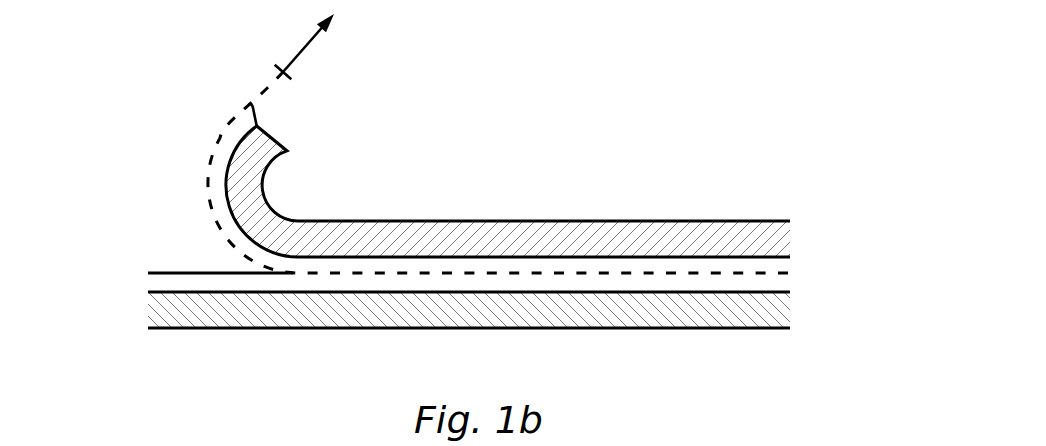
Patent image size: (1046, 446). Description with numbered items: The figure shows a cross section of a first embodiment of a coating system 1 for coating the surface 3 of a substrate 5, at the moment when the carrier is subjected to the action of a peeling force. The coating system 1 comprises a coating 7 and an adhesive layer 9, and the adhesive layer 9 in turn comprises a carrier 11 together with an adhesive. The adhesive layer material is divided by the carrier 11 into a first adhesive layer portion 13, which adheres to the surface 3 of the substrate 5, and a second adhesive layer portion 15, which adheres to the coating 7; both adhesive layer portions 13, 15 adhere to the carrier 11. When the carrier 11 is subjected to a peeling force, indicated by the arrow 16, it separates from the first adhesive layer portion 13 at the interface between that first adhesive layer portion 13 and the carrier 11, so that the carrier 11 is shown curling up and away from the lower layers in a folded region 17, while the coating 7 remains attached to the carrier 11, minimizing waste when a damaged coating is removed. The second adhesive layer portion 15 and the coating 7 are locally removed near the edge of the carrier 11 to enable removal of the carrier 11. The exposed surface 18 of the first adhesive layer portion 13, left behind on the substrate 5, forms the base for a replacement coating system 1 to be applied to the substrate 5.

The coating system 1 is at (114, 257).
The surface 3 is at (758, 281).
The substrate 5 is at (183, 308).
The coating 7 is at (772, 196).
The adhesive layer 9 is at (812, 262).
The carrier 11 is at (602, 273).
The first adhesive layer portion 13 is at (515, 288).
The second adhesive layer portion 15 is at (378, 270).
The arrow 16 is at (303, 55).
The folded portion 17 is at (293, 233).
The exposed surface 18 is at (196, 263).